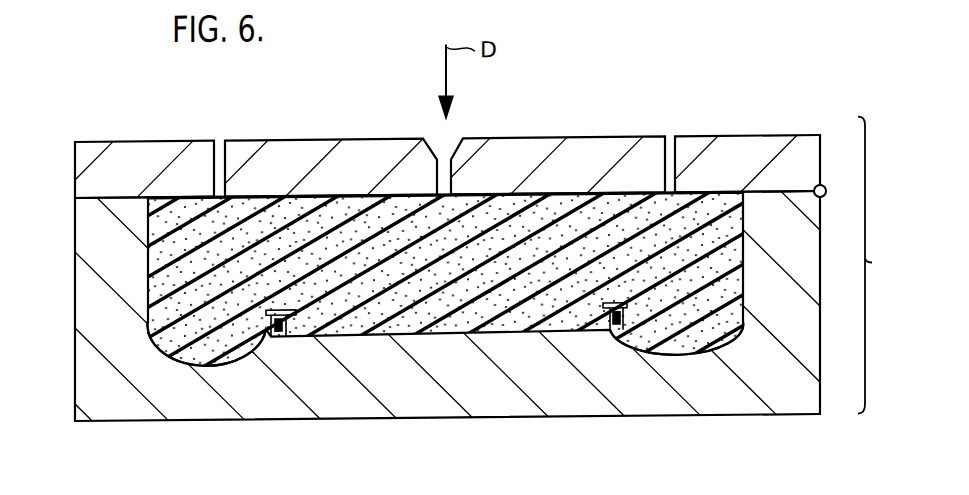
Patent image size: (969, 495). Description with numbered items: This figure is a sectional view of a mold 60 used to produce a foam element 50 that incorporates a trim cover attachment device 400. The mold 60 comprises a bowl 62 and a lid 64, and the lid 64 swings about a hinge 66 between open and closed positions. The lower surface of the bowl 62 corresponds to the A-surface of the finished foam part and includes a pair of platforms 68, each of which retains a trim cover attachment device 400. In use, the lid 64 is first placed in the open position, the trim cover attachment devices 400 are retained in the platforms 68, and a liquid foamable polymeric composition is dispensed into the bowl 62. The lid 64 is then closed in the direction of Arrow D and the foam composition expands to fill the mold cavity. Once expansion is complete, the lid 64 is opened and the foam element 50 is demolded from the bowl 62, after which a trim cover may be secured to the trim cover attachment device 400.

The foam element 50 is at (712, 249).
The mold 60 is at (489, 268).
The bowl 62 is at (90, 299).
The lid 64 is at (130, 158).
The hinge 66 is at (823, 192).
The platforms 68 is at (268, 324).
The trim cover attachment device 400 is at (300, 316).